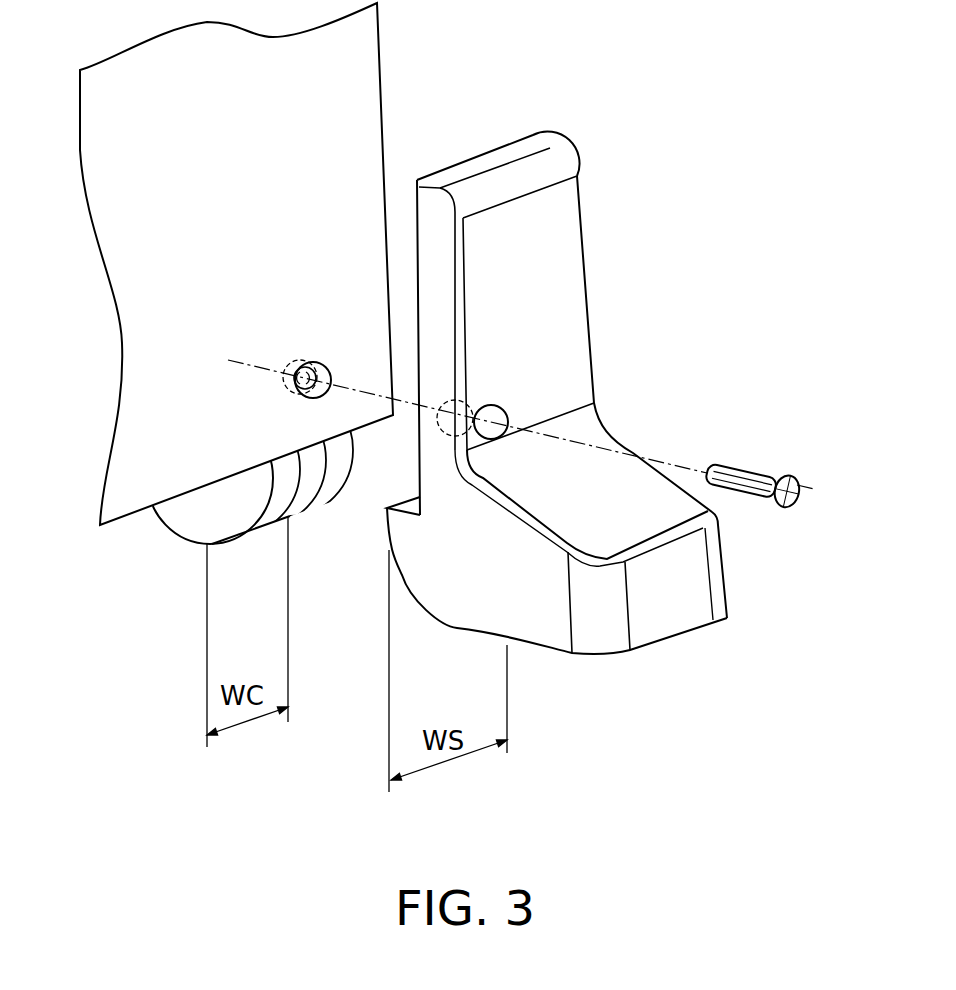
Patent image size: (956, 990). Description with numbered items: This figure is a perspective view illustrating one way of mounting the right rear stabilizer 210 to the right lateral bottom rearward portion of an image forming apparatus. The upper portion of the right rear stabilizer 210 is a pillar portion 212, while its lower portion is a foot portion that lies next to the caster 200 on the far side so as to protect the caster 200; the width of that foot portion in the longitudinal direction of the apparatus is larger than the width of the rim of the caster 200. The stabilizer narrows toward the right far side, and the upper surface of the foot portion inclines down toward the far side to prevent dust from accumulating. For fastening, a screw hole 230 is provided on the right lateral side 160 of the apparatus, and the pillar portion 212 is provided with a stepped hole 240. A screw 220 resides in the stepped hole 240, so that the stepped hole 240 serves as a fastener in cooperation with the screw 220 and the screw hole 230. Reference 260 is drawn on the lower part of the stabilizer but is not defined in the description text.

The right lateral side 160 is at (353, 82).
The caster 200 is at (183, 527).
The screw hole 230 is at (330, 365).
The right rear stabilizer 210 is at (590, 442).
The pillar portion 212 is at (558, 224).
The stepped hole 240 is at (497, 418).
The base portion of bracket 260 is at (703, 628).
The screw 220 is at (748, 477).